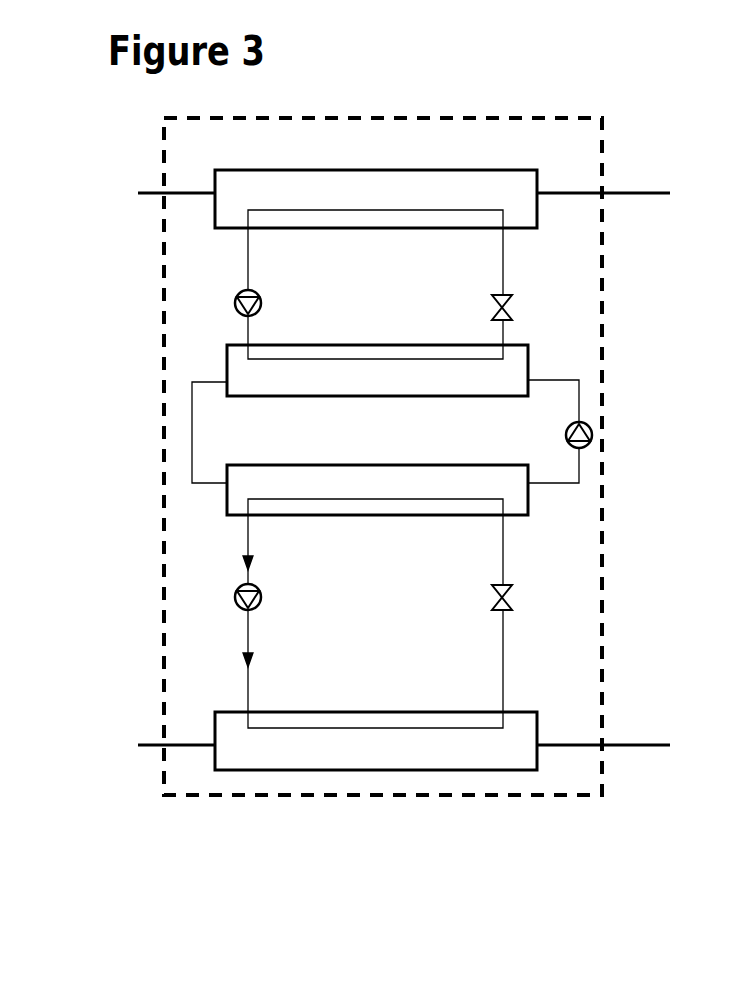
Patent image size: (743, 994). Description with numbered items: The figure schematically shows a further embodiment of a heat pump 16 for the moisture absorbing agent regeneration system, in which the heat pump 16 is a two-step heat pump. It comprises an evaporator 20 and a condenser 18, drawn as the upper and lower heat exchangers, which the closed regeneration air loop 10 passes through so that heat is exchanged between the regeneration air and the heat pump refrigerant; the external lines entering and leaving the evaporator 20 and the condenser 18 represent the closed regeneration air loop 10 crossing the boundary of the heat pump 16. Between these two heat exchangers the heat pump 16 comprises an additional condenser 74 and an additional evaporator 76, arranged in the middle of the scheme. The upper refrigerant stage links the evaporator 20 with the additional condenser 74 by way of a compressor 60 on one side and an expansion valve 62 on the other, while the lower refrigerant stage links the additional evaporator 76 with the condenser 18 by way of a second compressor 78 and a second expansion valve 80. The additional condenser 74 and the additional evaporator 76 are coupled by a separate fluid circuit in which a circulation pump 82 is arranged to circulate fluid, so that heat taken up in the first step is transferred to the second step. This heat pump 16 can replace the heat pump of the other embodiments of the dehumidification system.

The closed regeneration air loop 10 is at (640, 748).
The heat pump 16 is at (455, 797).
The condenser 18 is at (304, 760).
The evaporator 20 is at (457, 186).
The compressor 60 is at (236, 292).
The expansion valve 62 is at (508, 314).
The additional condenser 74 is at (518, 375).
The additional evaporator 76 is at (518, 505).
The compressor 78 is at (236, 587).
The expansion valve 80 is at (508, 603).
The circulation pump 82 is at (585, 443).